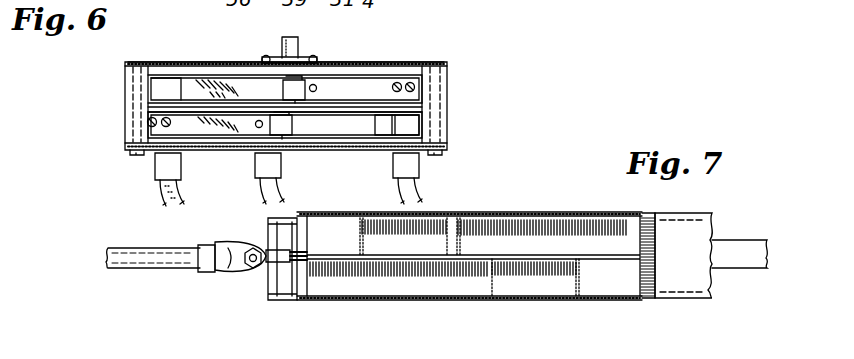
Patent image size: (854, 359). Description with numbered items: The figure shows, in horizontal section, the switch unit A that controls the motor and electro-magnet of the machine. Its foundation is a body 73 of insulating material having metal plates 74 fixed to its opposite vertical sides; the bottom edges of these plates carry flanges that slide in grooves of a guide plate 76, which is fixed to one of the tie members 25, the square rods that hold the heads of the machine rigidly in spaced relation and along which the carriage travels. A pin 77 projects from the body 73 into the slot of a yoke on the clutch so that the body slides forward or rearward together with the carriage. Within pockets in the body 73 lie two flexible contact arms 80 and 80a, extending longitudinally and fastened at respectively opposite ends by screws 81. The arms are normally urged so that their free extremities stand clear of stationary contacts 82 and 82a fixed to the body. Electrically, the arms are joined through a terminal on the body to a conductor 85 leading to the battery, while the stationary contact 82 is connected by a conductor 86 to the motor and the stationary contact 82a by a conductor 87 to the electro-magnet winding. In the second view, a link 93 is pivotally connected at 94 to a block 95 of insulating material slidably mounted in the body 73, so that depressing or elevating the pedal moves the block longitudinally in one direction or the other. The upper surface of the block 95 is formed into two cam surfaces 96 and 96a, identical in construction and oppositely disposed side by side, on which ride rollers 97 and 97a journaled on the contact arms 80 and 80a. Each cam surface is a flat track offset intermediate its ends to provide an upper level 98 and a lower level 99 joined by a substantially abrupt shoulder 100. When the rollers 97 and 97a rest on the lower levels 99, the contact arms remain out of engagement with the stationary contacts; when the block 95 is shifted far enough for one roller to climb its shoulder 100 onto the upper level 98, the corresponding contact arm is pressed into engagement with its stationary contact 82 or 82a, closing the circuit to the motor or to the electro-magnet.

In FIG. 6, the body 73 is at (445, 90).
In FIG. 6, the metal plates 74 is at (392, 63).
In FIG. 7, the metal plates 74 is at (608, 214).
In FIG. 7, the guide plate 76 is at (693, 218).
In FIG. 6, the pin 77 is at (283, 46).
In FIG. 6, the flexible contact arm 80 is at (227, 92).
In FIG. 6, the flexible contact arm 80a is at (345, 130).
In FIG. 6, the screws 81 is at (412, 86).
In FIG. 6, the stationary contact 82 is at (157, 77).
In FIG. 6, the stationary contact 82a is at (418, 108).
In FIG. 6, the conductor 85 is at (268, 189).
In FIG. 6, the conductor 86 is at (162, 191).
In FIG. 6, the conductor 87 is at (416, 186).
In FIG. 6, the roller 97 is at (305, 86).
In FIG. 6, the roller 97a is at (268, 126).
In FIG. 6, the unit A is at (363, 59).
In FIG. 7, the link 93 is at (222, 268).
In FIG. 7, the pivotal connection 94 is at (251, 264).
In FIG. 7, the block 95 is at (325, 282).
In FIG. 7, the cam surface 96 is at (430, 282).
In FIG. 7, the cam surface 96a is at (480, 232).
In FIG. 7, the upper level 98 is at (384, 240).
In FIG. 7, the lower level 99 is at (532, 238).
In FIG. 7, the shoulder 100 is at (455, 240).
In FIG. 7, the tie members 25 is at (735, 252).